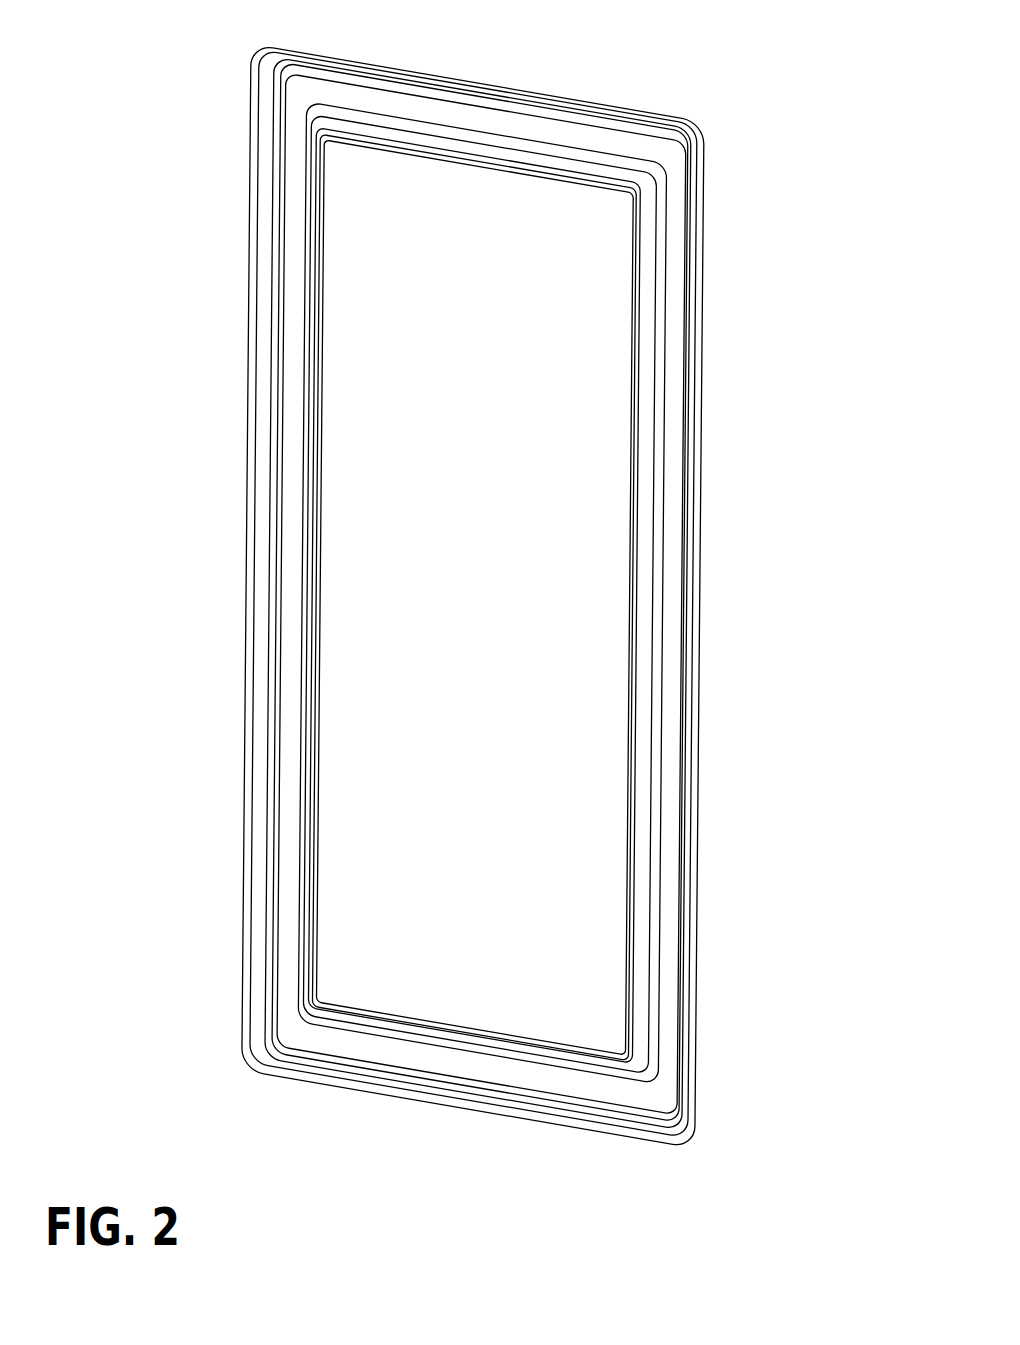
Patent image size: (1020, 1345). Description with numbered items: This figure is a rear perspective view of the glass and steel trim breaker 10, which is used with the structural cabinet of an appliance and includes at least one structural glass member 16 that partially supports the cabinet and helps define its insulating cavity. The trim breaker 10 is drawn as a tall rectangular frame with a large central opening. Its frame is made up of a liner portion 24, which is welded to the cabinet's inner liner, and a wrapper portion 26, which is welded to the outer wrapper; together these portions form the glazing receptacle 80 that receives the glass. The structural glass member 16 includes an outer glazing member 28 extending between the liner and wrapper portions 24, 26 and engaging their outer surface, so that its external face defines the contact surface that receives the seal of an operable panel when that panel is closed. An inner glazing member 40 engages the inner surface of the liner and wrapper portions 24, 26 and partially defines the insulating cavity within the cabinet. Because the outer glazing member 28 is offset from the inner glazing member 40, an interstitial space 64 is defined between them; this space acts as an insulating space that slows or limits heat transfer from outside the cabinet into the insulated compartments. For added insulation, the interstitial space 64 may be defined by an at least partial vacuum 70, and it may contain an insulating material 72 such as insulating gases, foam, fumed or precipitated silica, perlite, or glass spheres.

The trim breaker 10 is at (536, 58).
The structural glass member 16 is at (651, 152).
The liner portion 24 is at (373, 138).
The wrapper portion 26 is at (701, 523).
The outer glazing member 28 is at (672, 283).
The inner glazing member 40 is at (670, 382).
The interstitial space 64 is at (276, 340).
The at least partial vacuum 70 is at (298, 543).
The insulating material 72 is at (672, 738).
The glazing receptacle 80 is at (240, 127).